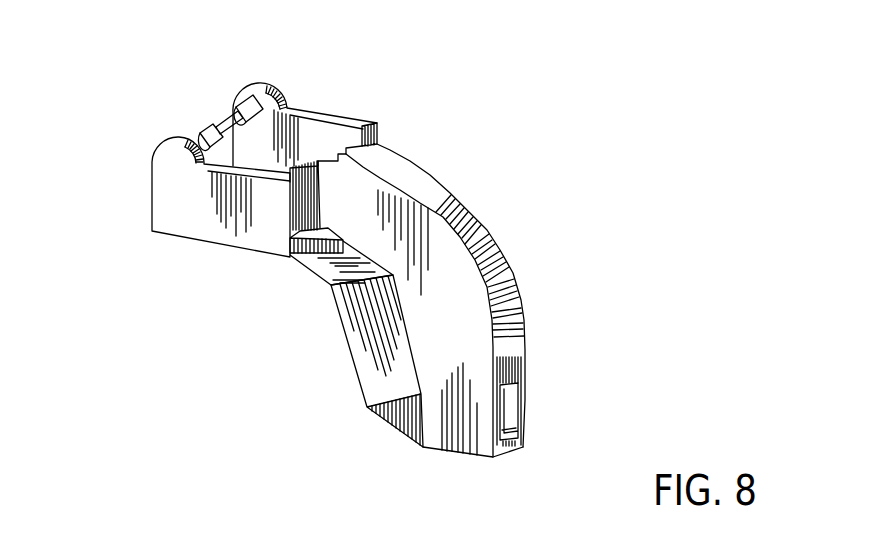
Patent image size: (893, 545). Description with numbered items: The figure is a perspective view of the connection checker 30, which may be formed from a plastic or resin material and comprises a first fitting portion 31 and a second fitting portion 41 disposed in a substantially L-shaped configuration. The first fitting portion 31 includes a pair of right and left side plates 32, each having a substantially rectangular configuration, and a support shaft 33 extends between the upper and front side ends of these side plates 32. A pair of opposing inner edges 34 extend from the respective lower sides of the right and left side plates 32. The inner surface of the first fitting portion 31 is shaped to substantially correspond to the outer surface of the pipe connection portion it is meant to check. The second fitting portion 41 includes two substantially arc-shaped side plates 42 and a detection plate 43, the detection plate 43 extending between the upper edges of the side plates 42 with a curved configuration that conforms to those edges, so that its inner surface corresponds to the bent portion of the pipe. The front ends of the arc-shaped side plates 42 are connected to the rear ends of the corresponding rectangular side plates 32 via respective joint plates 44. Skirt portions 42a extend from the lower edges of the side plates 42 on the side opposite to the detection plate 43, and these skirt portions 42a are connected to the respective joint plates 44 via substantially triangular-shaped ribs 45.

The connection checker 30 is at (512, 233).
The first fitting portion 31 is at (349, 106).
The side plates 32 is at (176, 218).
The support shaft 33 is at (223, 123).
The inner edges 34 is at (247, 110).
The second fitting portion 41 is at (537, 331).
The side plates 42 is at (447, 293).
The skirt portions 42a is at (372, 368).
The detection plate 43 is at (527, 352).
The joint plates 44 is at (377, 135).
The ribs 45 is at (323, 243).